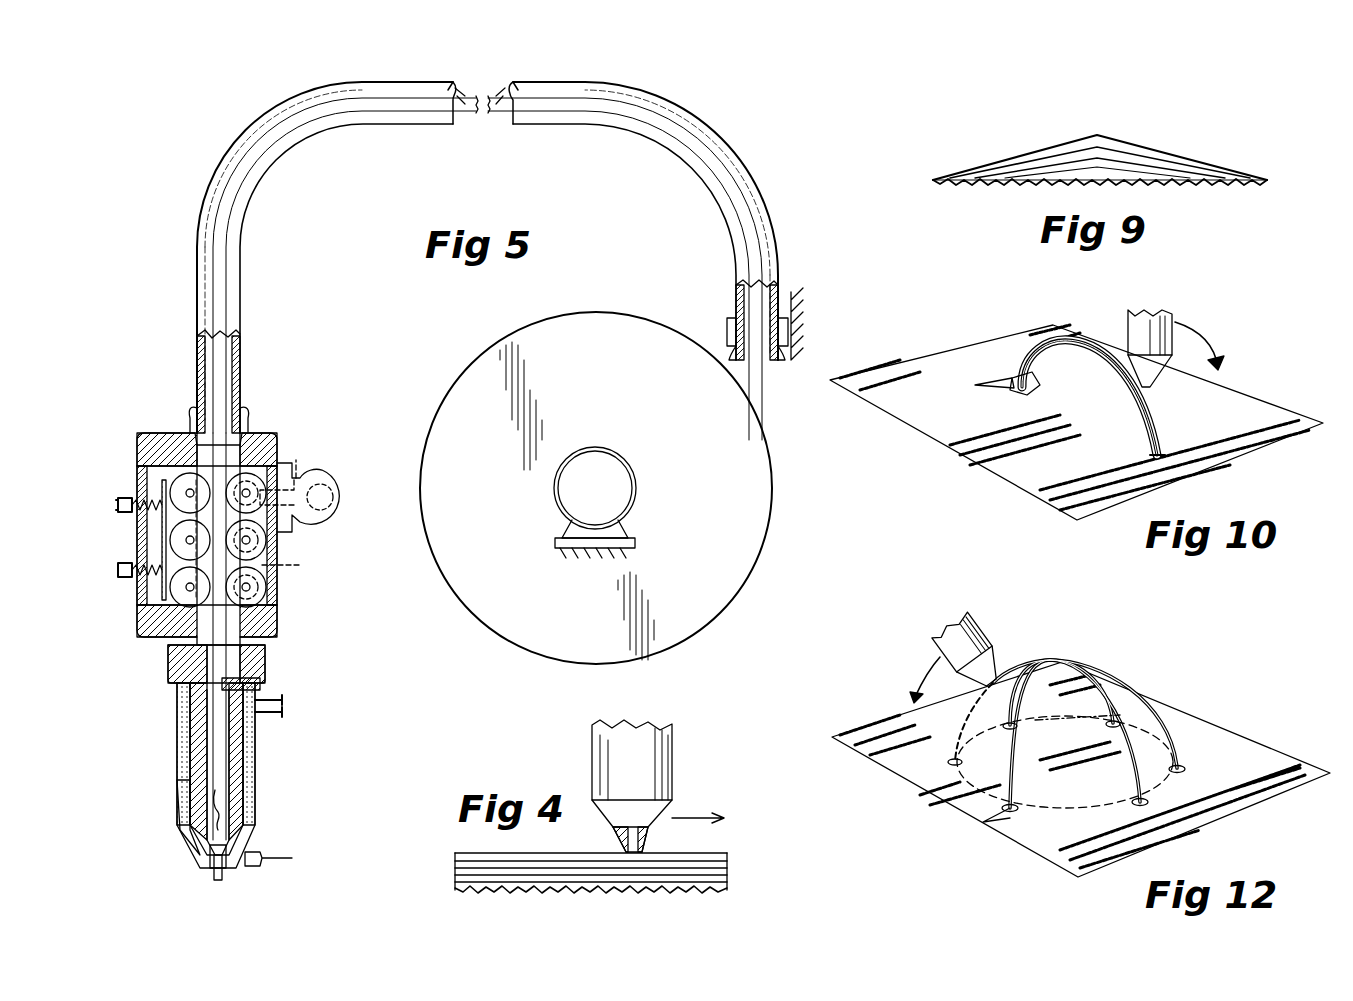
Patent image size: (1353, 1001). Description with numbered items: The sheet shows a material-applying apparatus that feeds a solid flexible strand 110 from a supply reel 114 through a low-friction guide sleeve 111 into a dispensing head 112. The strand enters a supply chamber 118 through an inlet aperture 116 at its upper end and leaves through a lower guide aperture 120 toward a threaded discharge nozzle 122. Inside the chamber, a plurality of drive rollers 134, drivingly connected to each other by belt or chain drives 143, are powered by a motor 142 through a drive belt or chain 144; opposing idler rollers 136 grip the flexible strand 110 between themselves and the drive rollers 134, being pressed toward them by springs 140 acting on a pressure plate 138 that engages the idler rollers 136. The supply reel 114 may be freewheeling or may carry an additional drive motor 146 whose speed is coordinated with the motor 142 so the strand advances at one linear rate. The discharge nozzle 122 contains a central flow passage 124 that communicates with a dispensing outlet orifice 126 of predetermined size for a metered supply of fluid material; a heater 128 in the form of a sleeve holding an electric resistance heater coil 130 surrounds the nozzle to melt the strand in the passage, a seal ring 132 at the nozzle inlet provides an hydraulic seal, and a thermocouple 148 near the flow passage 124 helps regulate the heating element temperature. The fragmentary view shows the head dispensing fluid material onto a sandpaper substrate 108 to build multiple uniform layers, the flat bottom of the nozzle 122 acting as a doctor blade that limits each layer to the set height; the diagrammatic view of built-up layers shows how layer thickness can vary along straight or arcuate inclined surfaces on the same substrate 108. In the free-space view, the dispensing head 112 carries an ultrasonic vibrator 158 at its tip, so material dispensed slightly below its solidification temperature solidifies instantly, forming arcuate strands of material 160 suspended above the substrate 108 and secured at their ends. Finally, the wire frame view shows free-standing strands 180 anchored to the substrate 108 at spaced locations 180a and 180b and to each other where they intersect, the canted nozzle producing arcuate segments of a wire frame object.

In FIG. 4, the sandpaper substrate 108 is at (612, 890).
In FIG. 9, the sandpaper substrate 108 is at (1040, 187).
In FIG. 10, the sandpaper substrate 108 is at (955, 445).
In FIG. 12, the sandpaper substrate 108 is at (940, 790).
In FIG. 5, the flexible strand 110 is at (197, 350).
In FIG. 5, the guide sleeve 111 is at (243, 316).
In FIG. 5, the dispensing head 112 is at (165, 826).
In FIG. 4, the dispensing head 112 is at (670, 768).
In FIG. 10, the dispensing head 112 is at (1125, 318).
In FIG. 12, the dispensing head 112 is at (932, 650).
In FIG. 5, the supply reel 114 is at (462, 603).
In FIG. 5, the inlet aperture 116 is at (190, 414).
In FIG. 5, the supply chamber 118 is at (270, 606).
In FIG. 5, the lower guide aperture 120 is at (168, 650).
In FIG. 5, the discharge nozzle 122 is at (207, 769).
In FIG. 4, the discharge nozzle 122 is at (655, 848).
In FIG. 5, the flow passage 124 is at (226, 808).
In FIG. 5, the dispensing outlet orifice 126 is at (214, 880).
In FIG. 5, the heater 128 is at (180, 795).
In FIG. 5, the electric resistance heater coil 130 is at (177, 720).
In FIG. 5, the seal ring 132 is at (262, 676).
In FIG. 5, the drive rollers 134 is at (266, 540).
In FIG. 5, the idler rollers 136 is at (195, 478).
In FIG. 5, the pressure plate 138 is at (162, 525).
In FIG. 5, the springs 140 is at (162, 500).
In FIG. 5, the motor 142 is at (330, 475).
In FIG. 5, the belt or chain drives 143 is at (307, 566).
In FIG. 5, the drive belt or chain 144 is at (297, 460).
In FIG. 5, the drive motor 146 is at (600, 450).
In FIG. 5, the thermocouple 148 is at (252, 866).
In FIG. 10, the ultrasonic vibrator 158 is at (1210, 302).
In FIG. 12, the ultrasonic vibrator 158 is at (982, 636).
In FIG. 10, the strands of material 160 is at (975, 386).
In FIG. 12, the free-standing strands 180 is at (1147, 692).
In FIG. 12, the anchoring location 180a is at (1005, 815).
In FIG. 12, the anchoring location 180b is at (1103, 731).